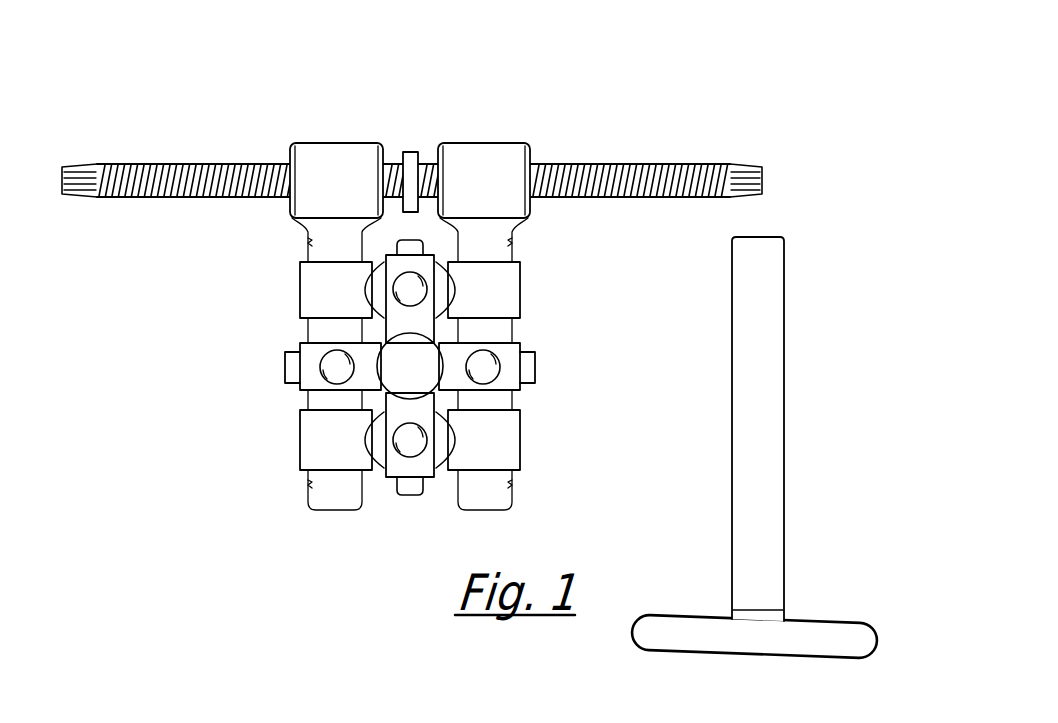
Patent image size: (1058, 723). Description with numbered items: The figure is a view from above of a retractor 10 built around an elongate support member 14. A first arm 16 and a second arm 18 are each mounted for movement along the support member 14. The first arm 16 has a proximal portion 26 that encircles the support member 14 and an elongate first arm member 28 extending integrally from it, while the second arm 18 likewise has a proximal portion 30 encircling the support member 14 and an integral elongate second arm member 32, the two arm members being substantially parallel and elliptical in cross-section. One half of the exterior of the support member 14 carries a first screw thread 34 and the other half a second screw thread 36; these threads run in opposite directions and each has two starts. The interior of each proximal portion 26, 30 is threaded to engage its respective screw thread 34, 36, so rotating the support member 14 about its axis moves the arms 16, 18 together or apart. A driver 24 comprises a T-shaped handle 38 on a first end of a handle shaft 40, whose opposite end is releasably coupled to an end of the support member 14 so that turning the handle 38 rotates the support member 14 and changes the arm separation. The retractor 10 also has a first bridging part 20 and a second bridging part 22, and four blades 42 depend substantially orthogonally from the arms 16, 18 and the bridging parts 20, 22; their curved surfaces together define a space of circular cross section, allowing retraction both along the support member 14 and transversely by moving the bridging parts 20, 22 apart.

The retractor 10 is at (582, 102).
The elongate support member 14 is at (247, 176).
The first arm 16 is at (335, 234).
The second arm 18 is at (487, 240).
The first bridging part 20 is at (373, 289).
The second bridging part 22 is at (377, 443).
The driver 24 is at (711, 387).
The proximal portion 26 is at (332, 165).
The first arm member 28 is at (320, 405).
The proximal portion 30 is at (478, 165).
The second arm member 32 is at (492, 400).
The first screw thread 34 is at (148, 199).
The second screw thread 36 is at (683, 192).
The T-shaped handle 38 is at (810, 640).
The handle shaft 40 is at (765, 483).
The blades 42 is at (410, 252).